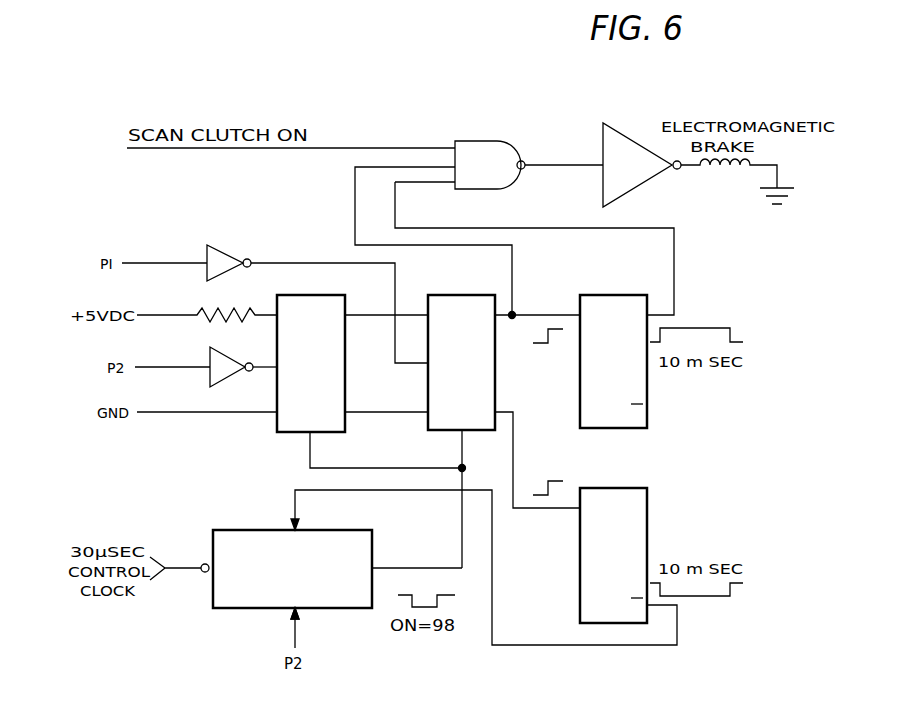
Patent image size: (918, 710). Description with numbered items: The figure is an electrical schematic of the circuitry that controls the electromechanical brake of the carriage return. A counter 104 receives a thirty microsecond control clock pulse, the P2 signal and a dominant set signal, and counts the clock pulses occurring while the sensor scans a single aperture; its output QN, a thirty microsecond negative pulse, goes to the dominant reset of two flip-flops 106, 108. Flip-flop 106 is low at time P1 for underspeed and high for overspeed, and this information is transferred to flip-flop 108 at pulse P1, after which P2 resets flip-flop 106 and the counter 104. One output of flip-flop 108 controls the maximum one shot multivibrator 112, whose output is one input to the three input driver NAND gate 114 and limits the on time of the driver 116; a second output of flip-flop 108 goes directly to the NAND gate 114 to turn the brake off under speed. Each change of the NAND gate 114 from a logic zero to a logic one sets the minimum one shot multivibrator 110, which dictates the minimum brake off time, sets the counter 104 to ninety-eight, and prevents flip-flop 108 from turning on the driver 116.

The counter 104 is at (255, 530).
The flip-flop 106 is at (330, 295).
The flip-flop 108 is at (477, 295).
The minimum one shot multivibrator 110 is at (604, 488).
The maximum one shot multivibrator 112 is at (623, 295).
The driver NAND gate 114 is at (490, 141).
The driver 116 is at (650, 114).